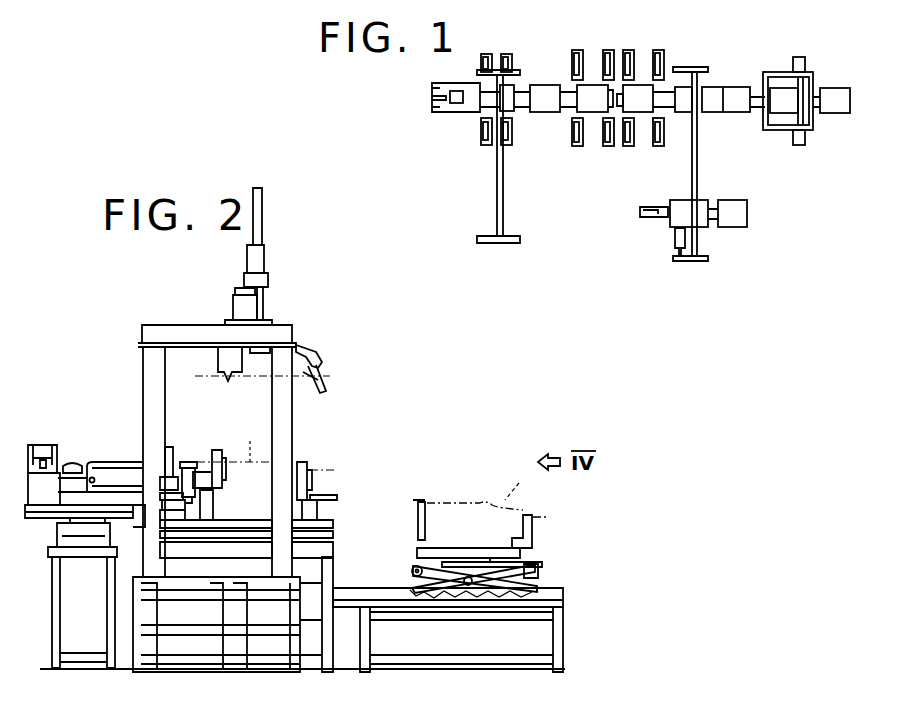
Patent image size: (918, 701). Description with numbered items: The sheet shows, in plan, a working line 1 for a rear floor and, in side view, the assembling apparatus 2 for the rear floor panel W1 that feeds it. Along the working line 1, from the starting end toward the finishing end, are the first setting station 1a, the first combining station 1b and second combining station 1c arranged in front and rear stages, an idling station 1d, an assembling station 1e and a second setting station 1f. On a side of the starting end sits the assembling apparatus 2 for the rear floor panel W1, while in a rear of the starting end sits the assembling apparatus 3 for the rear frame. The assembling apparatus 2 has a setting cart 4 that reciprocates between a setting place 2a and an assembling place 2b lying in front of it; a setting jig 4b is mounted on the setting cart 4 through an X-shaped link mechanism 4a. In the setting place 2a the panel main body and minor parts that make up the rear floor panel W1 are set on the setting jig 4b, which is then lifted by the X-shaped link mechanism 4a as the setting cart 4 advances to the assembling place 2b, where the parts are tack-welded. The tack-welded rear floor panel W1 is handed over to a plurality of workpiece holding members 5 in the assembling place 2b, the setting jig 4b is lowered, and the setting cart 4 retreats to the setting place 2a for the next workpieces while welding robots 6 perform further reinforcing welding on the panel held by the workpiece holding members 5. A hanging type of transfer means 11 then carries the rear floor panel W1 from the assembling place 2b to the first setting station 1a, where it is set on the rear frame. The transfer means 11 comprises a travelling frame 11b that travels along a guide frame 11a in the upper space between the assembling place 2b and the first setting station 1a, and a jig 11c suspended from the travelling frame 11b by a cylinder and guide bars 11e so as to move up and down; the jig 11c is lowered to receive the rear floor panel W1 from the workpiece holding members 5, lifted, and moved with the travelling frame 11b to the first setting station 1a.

In FIG. 1, the working line 1 is at (672, 48).
In FIG. 1, the first setting station 1a is at (698, 101).
In FIG. 1, the first combining station 1b is at (641, 102).
In FIG. 1, the second combining station 1c is at (592, 101).
In FIG. 1, the idling station 1d is at (545, 102).
In FIG. 1, the assembling station 1e is at (492, 98).
In FIG. 1, the second setting station 1f is at (436, 100).
In FIG. 1, the assembling apparatus 2 is at (670, 239).
In FIG. 2, the setting place 2a is at (489, 471).
In FIG. 2, the assembling place 2b is at (232, 425).
In FIG. 1, the assembling apparatus 3 is at (782, 60).
In FIG. 2, the setting cart 4 is at (546, 588).
In FIG. 2, the X-shaped link mechanism 4a is at (400, 577).
In FIG. 2, the setting jig 4b is at (518, 555).
In FIG. 2, the workpiece holding members 5 is at (209, 455).
In FIG. 2, the welding robots 6 is at (96, 445).
In FIG. 2, the transfer means 11 is at (267, 256).
In FIG. 2, the guide frame 11a is at (243, 306).
In FIG. 2, the travelling frame 11b is at (260, 306).
In FIG. 2, the jig 11c is at (228, 348).
In FIG. 2, the guide bars 11e is at (259, 212).
In FIG. 2, the rear floor panel W1 is at (267, 445).